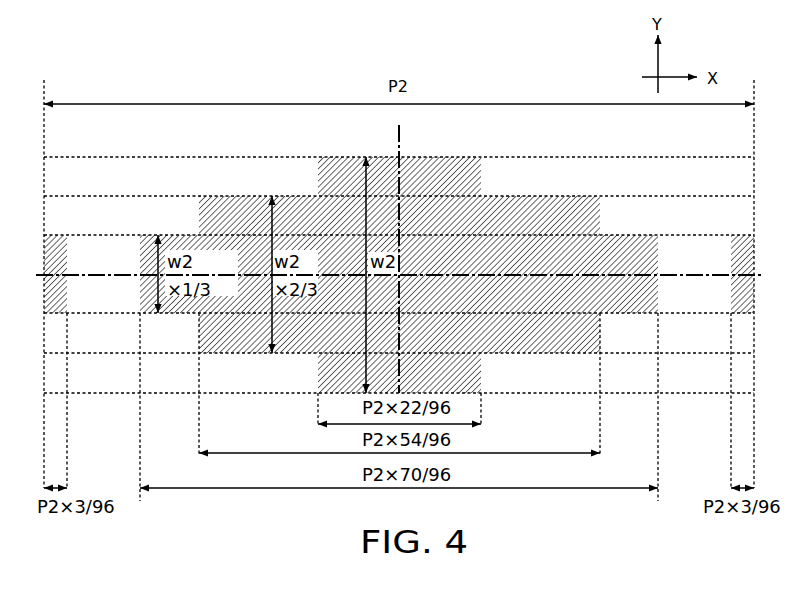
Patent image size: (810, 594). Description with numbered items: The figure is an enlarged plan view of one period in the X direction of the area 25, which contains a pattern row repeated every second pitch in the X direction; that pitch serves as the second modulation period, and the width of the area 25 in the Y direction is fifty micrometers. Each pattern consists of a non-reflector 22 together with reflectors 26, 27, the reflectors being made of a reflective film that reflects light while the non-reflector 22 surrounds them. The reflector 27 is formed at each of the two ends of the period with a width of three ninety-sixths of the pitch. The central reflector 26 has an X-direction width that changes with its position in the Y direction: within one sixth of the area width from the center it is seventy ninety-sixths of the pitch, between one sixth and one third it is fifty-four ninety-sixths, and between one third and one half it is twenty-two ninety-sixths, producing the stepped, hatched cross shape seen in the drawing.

The non-reflector 22 is at (125, 177).
The area 25 is at (412, 48).
The reflector 26 is at (421, 166).
The reflector 27 is at (63, 260).